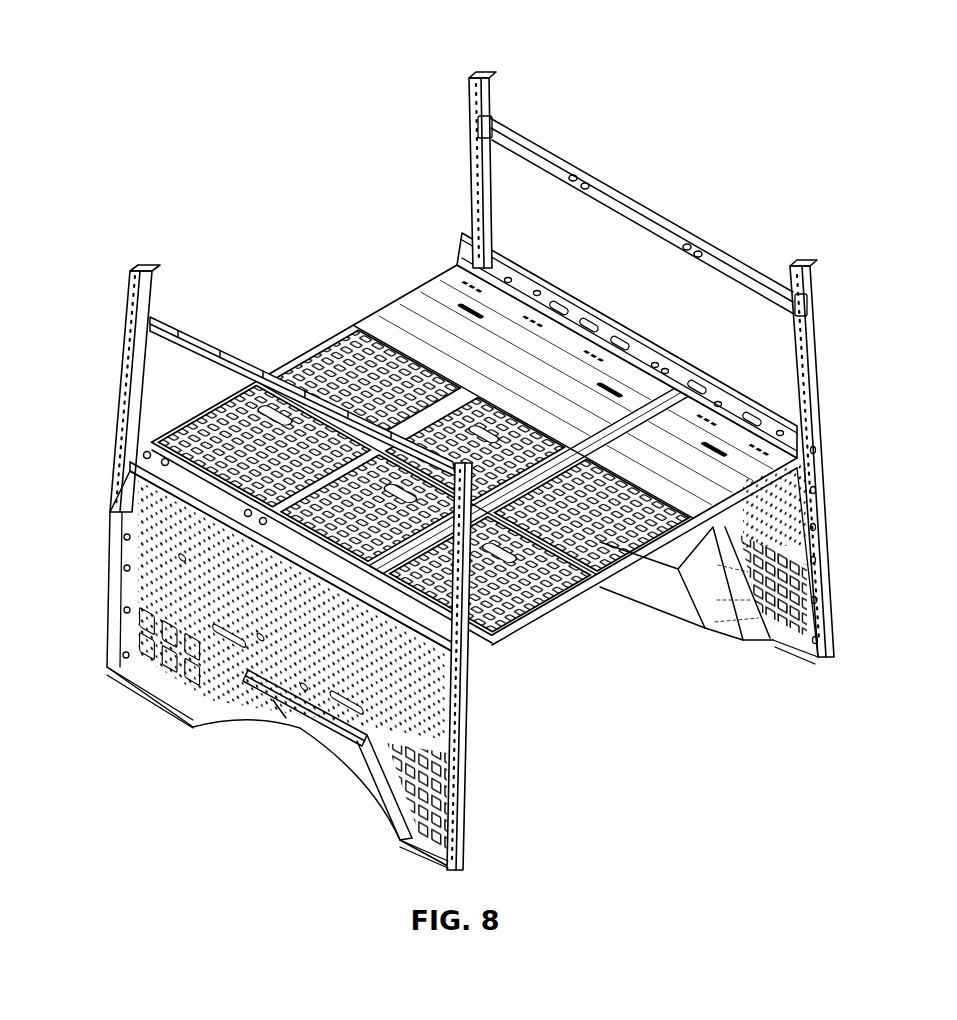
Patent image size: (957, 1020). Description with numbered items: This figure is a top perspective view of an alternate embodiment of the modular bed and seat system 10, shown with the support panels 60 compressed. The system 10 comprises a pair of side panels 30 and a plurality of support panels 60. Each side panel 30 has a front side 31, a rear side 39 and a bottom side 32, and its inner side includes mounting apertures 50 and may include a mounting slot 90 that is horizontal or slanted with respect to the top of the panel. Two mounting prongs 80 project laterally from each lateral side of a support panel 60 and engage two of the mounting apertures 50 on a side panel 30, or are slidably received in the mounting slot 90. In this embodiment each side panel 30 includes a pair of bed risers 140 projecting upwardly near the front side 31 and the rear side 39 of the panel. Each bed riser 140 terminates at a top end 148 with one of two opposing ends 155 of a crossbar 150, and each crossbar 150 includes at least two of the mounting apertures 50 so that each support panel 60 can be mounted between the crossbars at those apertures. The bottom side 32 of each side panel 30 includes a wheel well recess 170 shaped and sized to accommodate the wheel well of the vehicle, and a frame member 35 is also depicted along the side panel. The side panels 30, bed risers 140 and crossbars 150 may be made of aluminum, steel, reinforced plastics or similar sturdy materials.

The modular bed and seat system 10 is at (487, 458).
The side panel 30 is at (803, 520).
The front side 31 is at (460, 840).
The bottom side 32 is at (432, 867).
The frame rail 35 is at (152, 452).
The rear side 39 is at (108, 545).
The mounting aperture 50 is at (503, 288).
The support panel 60 is at (430, 300).
The mounting prong 80 is at (468, 648).
The mounting slot 90 is at (585, 322).
The bed riser 140 is at (140, 372).
The top end 148 is at (475, 78).
The crossbar 150 is at (660, 215).
The opposing end 155 is at (498, 140).
The wheel well recess 170 is at (718, 628).